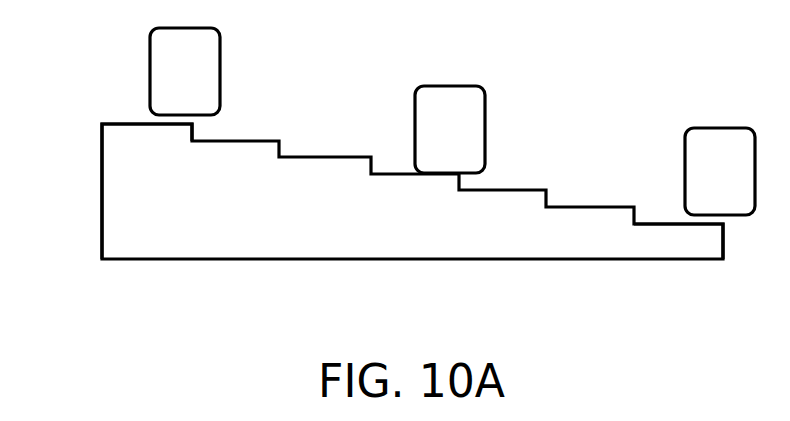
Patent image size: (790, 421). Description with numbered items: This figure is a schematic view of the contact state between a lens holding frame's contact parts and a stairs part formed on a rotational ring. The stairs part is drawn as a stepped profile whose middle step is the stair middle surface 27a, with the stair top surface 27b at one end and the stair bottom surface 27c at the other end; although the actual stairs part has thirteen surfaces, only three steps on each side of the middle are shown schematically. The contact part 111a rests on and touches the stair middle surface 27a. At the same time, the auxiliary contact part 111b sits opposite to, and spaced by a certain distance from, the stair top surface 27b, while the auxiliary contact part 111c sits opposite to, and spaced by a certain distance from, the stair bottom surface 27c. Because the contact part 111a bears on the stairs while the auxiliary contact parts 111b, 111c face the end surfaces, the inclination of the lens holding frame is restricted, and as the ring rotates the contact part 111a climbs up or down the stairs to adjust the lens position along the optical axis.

The stair middle surface 27a is at (410, 177).
The stair top surface 27b is at (155, 125).
The stair bottom surface 27c is at (673, 225).
The contact part 111a is at (450, 130).
The auxiliary contact part 111b is at (178, 72).
The auxiliary contact part 111c is at (705, 178).